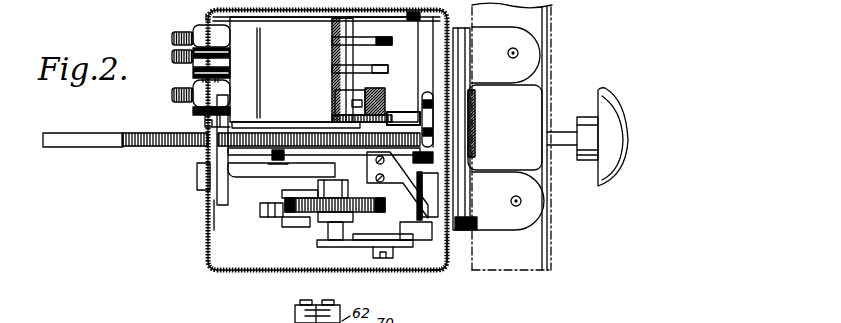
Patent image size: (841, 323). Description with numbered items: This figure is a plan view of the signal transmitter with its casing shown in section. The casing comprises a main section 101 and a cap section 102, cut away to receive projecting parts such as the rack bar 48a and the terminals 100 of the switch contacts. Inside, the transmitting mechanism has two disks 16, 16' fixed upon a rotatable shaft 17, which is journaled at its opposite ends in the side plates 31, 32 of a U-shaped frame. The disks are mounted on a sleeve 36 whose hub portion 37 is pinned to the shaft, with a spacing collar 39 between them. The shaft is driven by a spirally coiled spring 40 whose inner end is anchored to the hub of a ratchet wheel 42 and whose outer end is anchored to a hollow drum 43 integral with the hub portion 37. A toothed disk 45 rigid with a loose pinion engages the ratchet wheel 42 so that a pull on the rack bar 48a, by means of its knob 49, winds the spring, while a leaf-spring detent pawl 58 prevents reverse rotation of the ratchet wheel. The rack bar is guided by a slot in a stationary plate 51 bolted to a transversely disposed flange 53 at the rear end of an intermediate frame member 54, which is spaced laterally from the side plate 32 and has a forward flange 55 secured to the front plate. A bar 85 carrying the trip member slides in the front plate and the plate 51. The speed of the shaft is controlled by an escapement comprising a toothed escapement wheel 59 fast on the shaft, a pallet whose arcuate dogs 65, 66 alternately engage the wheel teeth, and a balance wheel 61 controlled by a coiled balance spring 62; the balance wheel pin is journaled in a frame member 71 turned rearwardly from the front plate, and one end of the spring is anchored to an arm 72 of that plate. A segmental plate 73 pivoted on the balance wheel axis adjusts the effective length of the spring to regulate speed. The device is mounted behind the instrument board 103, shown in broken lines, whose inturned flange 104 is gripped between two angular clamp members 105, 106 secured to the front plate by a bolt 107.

The disk 16 is at (373, 63).
The disk 16' is at (375, 37).
The shaft 17 is at (353, 34).
The side plate 31 is at (208, 17).
The side plate 32 is at (360, 244).
The sleeve 36 is at (352, 27).
The hub portion 37 is at (367, 80).
The spacing collar 39 is at (355, 58).
The spirally coiled spring 40 is at (336, 100).
The ratchet wheel 42 is at (334, 112).
The hollow drum 43 is at (386, 98).
The disk 45 is at (332, 120).
The rack bar 48a is at (103, 141).
The knob 49 is at (606, 95).
The stationary plate 51 is at (207, 149).
The flange 53 is at (213, 160).
The intermediate frame member 54 is at (213, 215).
The flange 55 is at (447, 245).
The detent pawl 58 is at (440, 113).
The escapement wheel 59 is at (268, 218).
The balance wheel 61 is at (311, 205).
The balance spring 62 is at (283, 155).
The arcuate dog 65 is at (378, 218).
The arcuate dog 66 is at (291, 212).
The frame member 71 is at (247, 173).
The arm 72 is at (447, 192).
The segmental plate 73 is at (397, 185).
The bar 85 is at (198, 178).
The terminals 100 is at (203, 72).
The main section 101 is at (217, 212).
The cap section 102 is at (447, 263).
The instrument board 103 is at (548, 56).
The inturned flange 104 is at (528, 247).
The angular member 105 is at (527, 108).
The angular member 106 is at (528, 45).
The bolt 107 is at (546, 168).